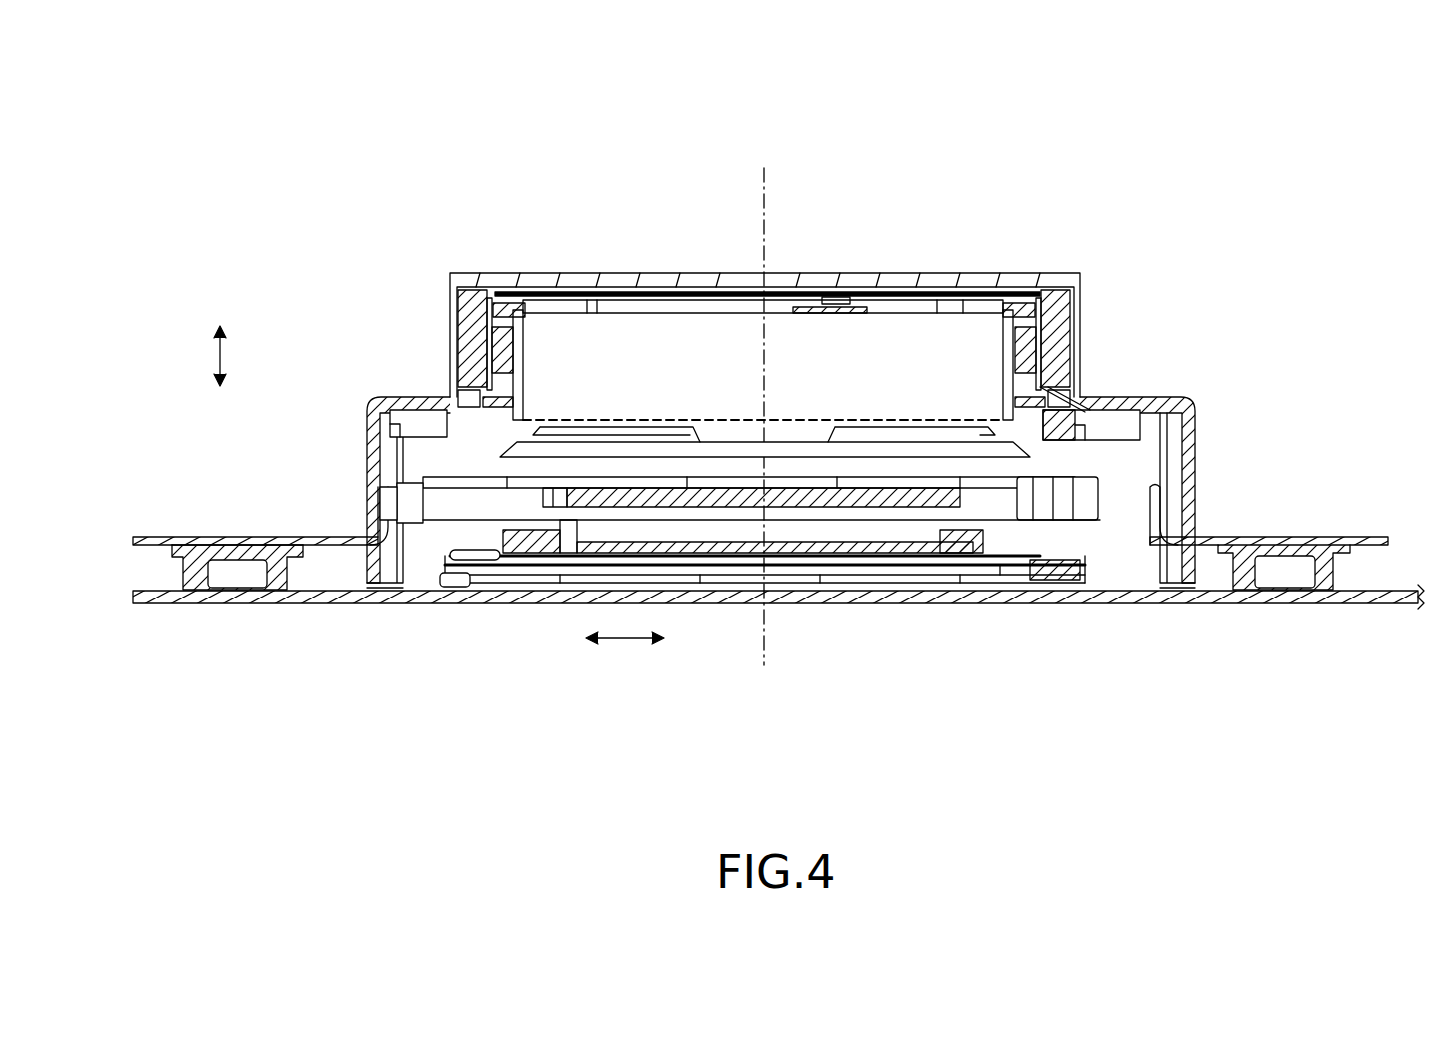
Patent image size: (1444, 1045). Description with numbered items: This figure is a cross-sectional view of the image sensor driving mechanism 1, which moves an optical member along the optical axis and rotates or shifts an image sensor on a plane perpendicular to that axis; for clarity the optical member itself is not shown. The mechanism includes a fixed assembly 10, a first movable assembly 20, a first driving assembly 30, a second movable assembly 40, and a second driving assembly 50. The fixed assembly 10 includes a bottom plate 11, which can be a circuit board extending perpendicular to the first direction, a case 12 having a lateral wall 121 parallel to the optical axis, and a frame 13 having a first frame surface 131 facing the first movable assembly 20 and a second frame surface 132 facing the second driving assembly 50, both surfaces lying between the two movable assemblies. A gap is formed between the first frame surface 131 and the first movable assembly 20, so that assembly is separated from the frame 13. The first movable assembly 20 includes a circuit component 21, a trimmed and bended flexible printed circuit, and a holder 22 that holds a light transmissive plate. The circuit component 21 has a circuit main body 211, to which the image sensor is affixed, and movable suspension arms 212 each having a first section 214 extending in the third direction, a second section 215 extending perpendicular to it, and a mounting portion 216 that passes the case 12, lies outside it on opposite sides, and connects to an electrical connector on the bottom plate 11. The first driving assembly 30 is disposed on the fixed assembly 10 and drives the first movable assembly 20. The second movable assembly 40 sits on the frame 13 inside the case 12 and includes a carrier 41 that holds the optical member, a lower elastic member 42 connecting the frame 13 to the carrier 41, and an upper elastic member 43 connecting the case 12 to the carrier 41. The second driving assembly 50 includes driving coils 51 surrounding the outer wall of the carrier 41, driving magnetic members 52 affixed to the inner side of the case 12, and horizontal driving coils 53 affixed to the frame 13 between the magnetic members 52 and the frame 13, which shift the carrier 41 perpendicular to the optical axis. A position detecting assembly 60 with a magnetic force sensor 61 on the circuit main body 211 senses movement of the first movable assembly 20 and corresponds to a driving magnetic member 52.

The image sensor driving mechanism 1 is at (1224, 156).
The fixed assembly 10 is at (162, 90).
The bottom plate 11 is at (1205, 603).
The case 12 is at (447, 270).
The lateral wall 121 is at (372, 428).
The frame 13 is at (1160, 438).
The first frame surface 131 is at (1025, 457).
The second frame surface 132 is at (1075, 385).
The first movable assembly 20 is at (162, 200).
The circuit component 21 is at (621, 343).
The circuit main body 211 is at (725, 566).
The movable suspension arm 212 is at (190, 536).
The first section 214 is at (405, 515).
The second section 215 is at (372, 510).
The mounting portion 216 is at (240, 537).
The holder 22 is at (1102, 504).
The first driving assembly 30 is at (1084, 572).
The second movable assembly 40 is at (706, 178).
The carrier 41 is at (540, 293).
The lower elastic member 42 is at (698, 418).
The upper elastic member 43 is at (660, 313).
The second driving assembly 50 is at (382, 310).
The driving coil 51 is at (500, 345).
The driving magnetic member 52 is at (465, 318).
The horizontal driving coil 53 is at (462, 395).
The position detecting assembly 60 is at (735, 594).
The magnetic force sensor 61 is at (532, 548).